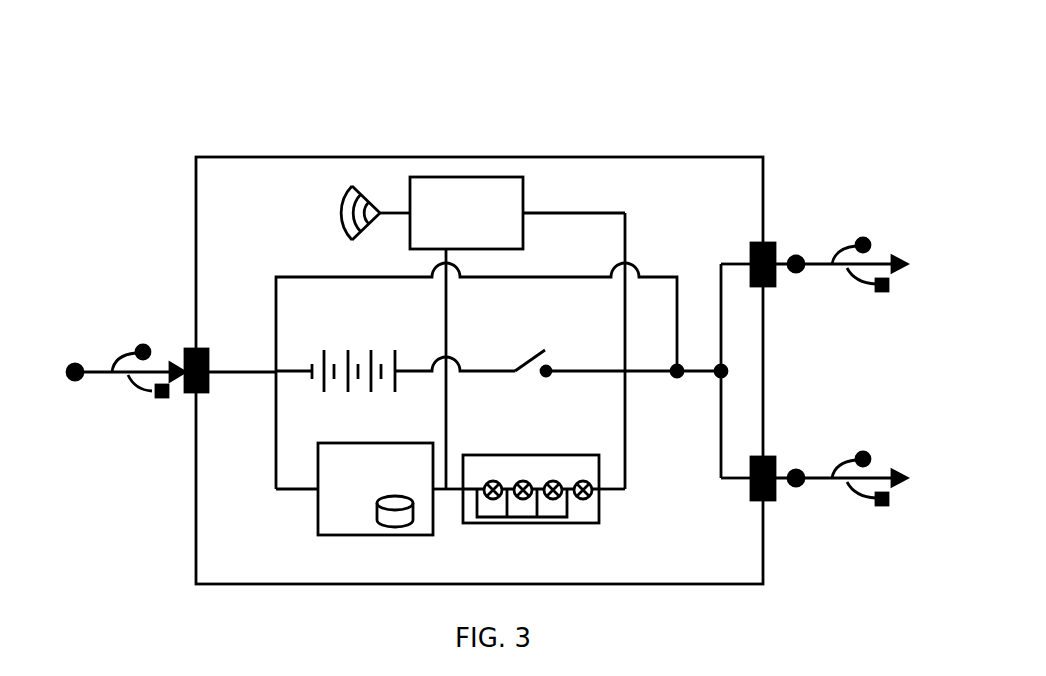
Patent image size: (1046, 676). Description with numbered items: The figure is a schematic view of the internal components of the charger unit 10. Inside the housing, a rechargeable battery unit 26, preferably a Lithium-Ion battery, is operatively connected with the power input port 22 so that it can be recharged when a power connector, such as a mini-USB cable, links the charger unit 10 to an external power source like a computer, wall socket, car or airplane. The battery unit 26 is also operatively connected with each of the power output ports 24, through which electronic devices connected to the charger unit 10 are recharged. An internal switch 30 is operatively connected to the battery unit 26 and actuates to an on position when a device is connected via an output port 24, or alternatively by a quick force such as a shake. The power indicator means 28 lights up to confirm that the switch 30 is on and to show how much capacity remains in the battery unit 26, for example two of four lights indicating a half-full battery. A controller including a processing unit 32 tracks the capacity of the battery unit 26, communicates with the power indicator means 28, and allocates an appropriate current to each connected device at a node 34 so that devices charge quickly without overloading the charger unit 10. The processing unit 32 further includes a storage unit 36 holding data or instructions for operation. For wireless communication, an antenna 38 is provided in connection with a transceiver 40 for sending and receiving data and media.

The charger unit 10 is at (321, 113).
The power input port 22 is at (119, 382).
The power output ports 24 is at (781, 255).
The rechargeable battery unit 26 is at (355, 352).
The power indicator means 28 is at (540, 523).
The internal switch 30 is at (537, 375).
The processing unit 32 is at (349, 443).
The node 34 is at (716, 374).
The storage unit 36 is at (403, 518).
The antenna 38 is at (340, 222).
The transceiver 40 is at (527, 183).